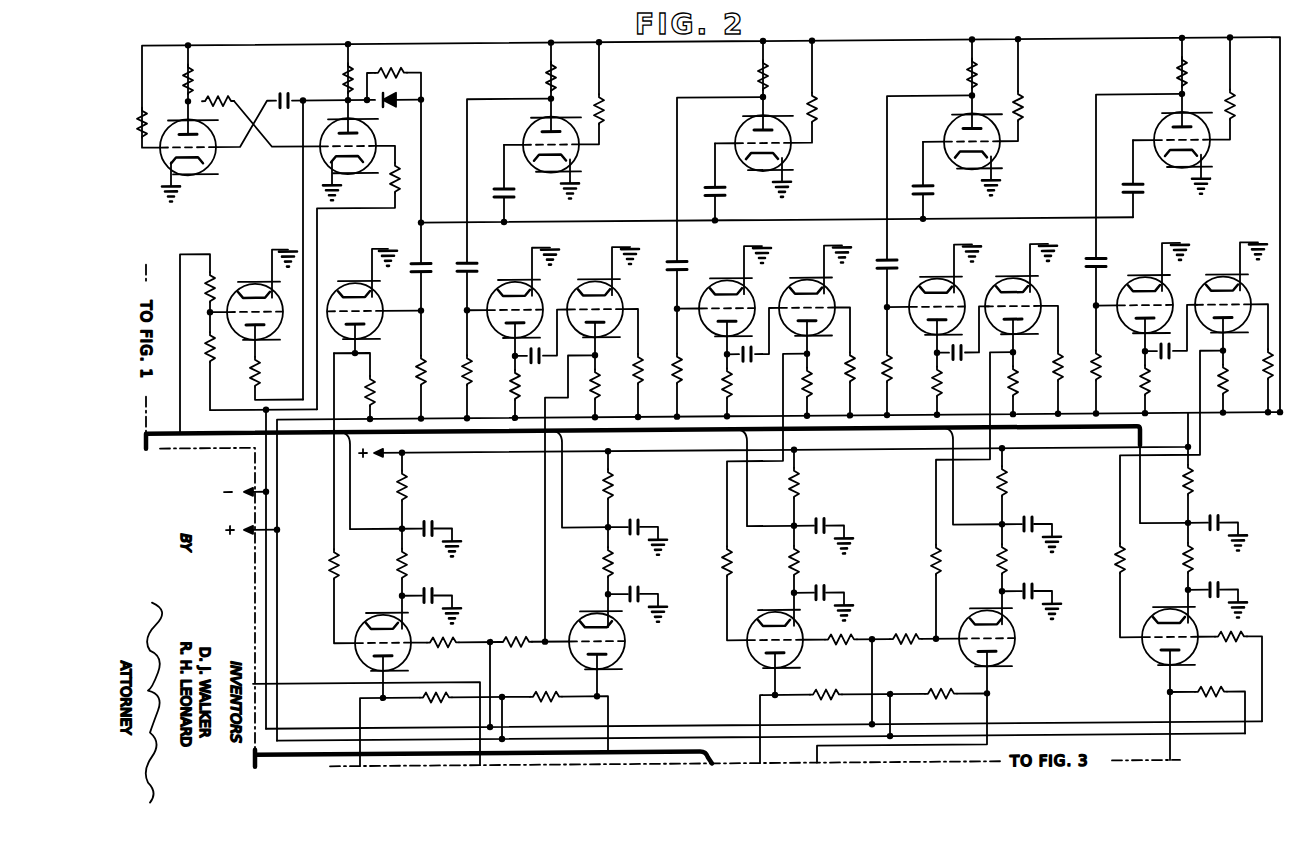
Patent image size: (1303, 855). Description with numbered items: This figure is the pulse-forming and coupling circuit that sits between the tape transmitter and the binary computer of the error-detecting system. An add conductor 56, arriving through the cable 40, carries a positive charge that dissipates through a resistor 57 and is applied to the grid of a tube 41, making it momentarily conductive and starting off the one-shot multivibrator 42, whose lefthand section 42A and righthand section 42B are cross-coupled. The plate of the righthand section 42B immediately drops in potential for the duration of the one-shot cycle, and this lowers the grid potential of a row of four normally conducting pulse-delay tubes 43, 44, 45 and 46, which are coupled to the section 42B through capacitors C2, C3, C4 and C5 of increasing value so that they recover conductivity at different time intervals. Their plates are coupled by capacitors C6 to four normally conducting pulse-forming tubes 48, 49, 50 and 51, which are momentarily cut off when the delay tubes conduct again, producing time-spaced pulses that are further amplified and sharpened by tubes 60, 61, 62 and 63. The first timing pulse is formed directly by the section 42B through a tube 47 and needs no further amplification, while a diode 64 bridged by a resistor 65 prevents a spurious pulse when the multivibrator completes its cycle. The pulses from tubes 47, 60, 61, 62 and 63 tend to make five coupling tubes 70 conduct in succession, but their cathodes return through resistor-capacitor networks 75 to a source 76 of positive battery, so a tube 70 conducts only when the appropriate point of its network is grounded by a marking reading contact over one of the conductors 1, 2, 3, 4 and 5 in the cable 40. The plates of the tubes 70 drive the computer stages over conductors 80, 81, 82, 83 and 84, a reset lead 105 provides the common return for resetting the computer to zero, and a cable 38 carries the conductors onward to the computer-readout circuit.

The 1-shot multivibrator 42 is at (262, 227).
The lefthand section of multivibrator 42A is at (162, 156).
The righthand section of multivibrator 42B is at (366, 112).
The diode 64 is at (400, 97).
The resistor 65 is at (404, 71).
The pulse-delay tube 43 is at (524, 136).
The pulse-delay tube 44 is at (780, 122).
The pulse-delay tube 45 is at (946, 130).
The pulse-delay tube 46 is at (1199, 122).
The capacitor C2 is at (514, 194).
The capacitor C3 is at (725, 194).
The capacitor C4 is at (933, 194).
The capacitor C5 is at (1142, 191).
The coupling capacitor C6 is at (438, 268).
The add conductor 56 is at (179, 261).
The resistor 57 is at (212, 272).
The tube 41 is at (254, 280).
The tube 47 is at (354, 280).
The pulse-forming tube 48 is at (498, 284).
The pulse-forming tube 49 is at (710, 284).
The pulse-forming tube 50 is at (920, 284).
The pulse-forming tube 51 is at (1130, 282).
The tube 60 is at (622, 292).
The tube 61 is at (832, 292).
The tube 62 is at (1040, 292).
The tube 63 is at (1243, 292).
The cable 40 is at (156, 449).
The source of positive battery 76 is at (383, 456).
The resistor-capacitor network 75 is at (822, 537).
The coupling tube 70 is at (370, 623).
The conductor 1 is at (370, 480).
The conductor 2 is at (579, 478).
The conductor 3 is at (764, 477).
The conductor 4 is at (971, 475).
The conductor 5 is at (1161, 484).
The reset lead 105 is at (294, 682).
The conductor 80 is at (358, 703).
The conductor 81 is at (608, 700).
The conductor 82 is at (758, 703).
The conductor 83 is at (988, 700).
The conductor 84 is at (1168, 703).
The cable 38 is at (276, 762).